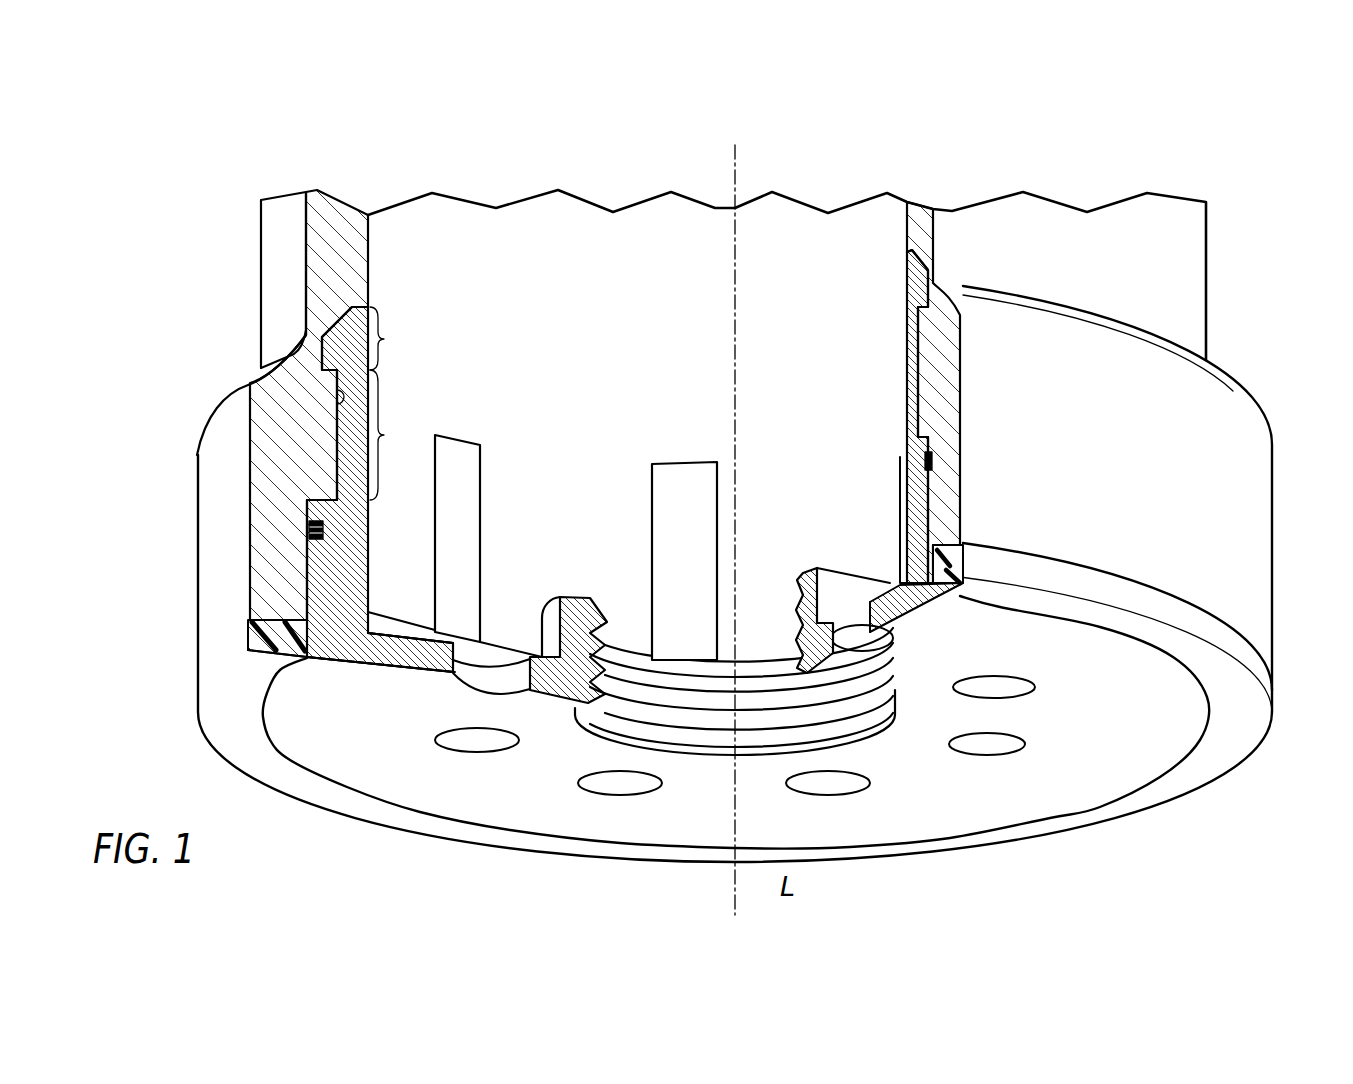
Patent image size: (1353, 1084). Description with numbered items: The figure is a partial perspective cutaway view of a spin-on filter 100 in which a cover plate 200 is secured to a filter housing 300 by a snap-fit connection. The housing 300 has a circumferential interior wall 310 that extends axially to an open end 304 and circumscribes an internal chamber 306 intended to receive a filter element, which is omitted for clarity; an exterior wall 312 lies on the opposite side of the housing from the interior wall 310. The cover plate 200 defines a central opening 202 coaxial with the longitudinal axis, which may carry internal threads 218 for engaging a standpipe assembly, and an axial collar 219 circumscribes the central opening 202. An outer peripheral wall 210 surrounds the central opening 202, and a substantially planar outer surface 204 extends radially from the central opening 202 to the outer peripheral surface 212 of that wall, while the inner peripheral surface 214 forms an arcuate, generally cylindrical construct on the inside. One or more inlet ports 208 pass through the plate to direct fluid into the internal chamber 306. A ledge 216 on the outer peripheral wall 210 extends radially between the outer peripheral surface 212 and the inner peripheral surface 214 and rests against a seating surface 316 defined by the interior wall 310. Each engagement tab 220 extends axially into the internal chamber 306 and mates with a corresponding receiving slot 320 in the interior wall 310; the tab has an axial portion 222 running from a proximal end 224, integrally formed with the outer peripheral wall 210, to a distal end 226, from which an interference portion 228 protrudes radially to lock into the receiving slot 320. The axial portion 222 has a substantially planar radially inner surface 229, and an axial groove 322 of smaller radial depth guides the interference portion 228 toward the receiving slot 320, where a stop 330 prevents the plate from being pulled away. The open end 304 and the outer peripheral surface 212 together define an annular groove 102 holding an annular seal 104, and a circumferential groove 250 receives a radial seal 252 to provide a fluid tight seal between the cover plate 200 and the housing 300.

The spin-on filter 100 is at (150, 183).
The annular groove 102 is at (955, 578).
The annular seal 104 is at (250, 637).
The cover plate 200 is at (1117, 825).
The central opening 202 is at (873, 698).
The outer surface 204 is at (1120, 743).
The inlet ports 208 is at (477, 752).
The outer peripheral wall 210 is at (347, 633).
The outer peripheral surface 212 is at (337, 580).
The inner peripheral surface 214 is at (368, 582).
The ledge 216 is at (317, 500).
The internal threads 218 is at (798, 613).
The axial collar 219 is at (840, 568).
The engagement tab 220 is at (900, 277).
The axial portion 222 is at (394, 435).
The proximal end 224 is at (928, 437).
The distal end 226 is at (928, 307).
The interference portion 228 is at (394, 338).
The radially inner surface 229 is at (696, 549).
The circumferential groove 250 is at (307, 557).
The radial seal 252 is at (925, 460).
The filter housing 300 is at (1250, 333).
The open end 304 is at (327, 630).
The internal chamber 306 is at (852, 232).
The interior wall 310 is at (444, 250).
The exterior wall 312 is at (272, 252).
The seating surface 316 is at (340, 513).
The receiving slot 320 is at (914, 416).
The axial groove 322 is at (340, 400).
The stop 330 is at (306, 327).